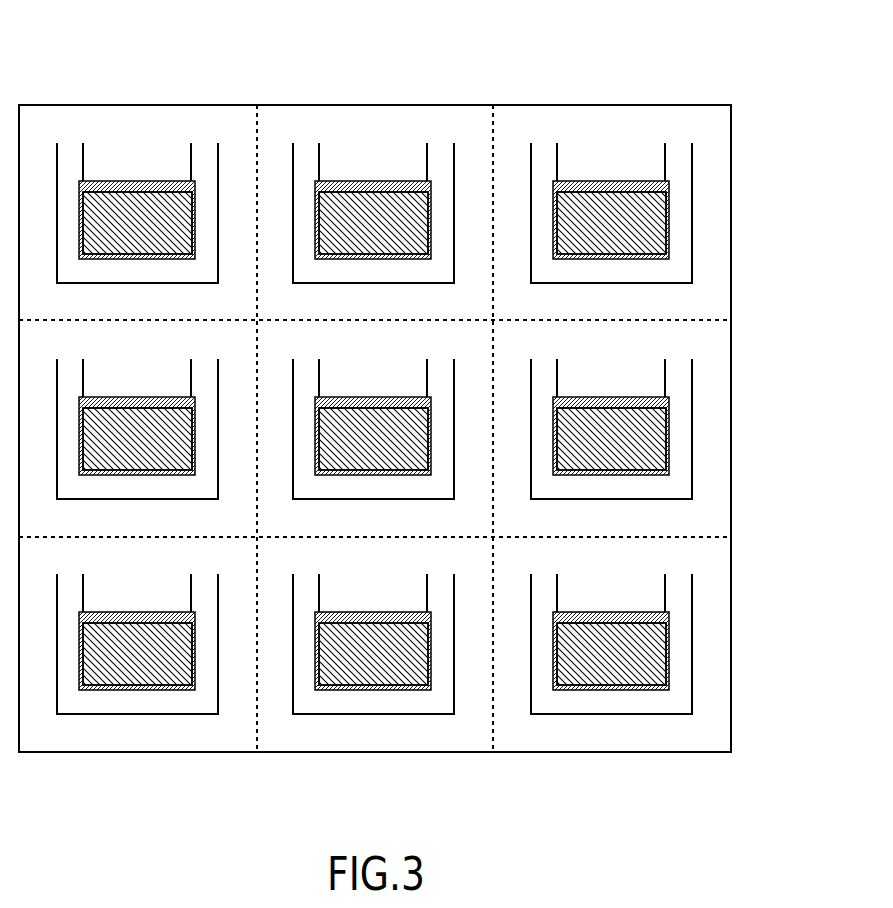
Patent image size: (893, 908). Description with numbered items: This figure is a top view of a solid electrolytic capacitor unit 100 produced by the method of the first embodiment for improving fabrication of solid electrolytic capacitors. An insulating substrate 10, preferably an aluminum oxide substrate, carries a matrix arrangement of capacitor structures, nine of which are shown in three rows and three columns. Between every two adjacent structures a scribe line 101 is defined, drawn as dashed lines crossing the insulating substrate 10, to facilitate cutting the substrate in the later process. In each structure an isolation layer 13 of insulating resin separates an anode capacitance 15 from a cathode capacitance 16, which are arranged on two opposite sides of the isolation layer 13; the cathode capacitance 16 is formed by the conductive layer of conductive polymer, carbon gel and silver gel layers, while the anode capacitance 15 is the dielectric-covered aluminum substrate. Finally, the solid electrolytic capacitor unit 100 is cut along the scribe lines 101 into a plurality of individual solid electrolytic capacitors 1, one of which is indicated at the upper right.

The solid electrolytic capacitor unit 100 is at (91, 38).
The scribe line 101 is at (492, 148).
The solid electrolytic capacitor 1 is at (664, 165).
The insulating substrate 10 is at (712, 295).
The isolation layer 13 is at (642, 187).
The anode capacitance 15 is at (589, 163).
The cathode capacitance 16 is at (650, 225).